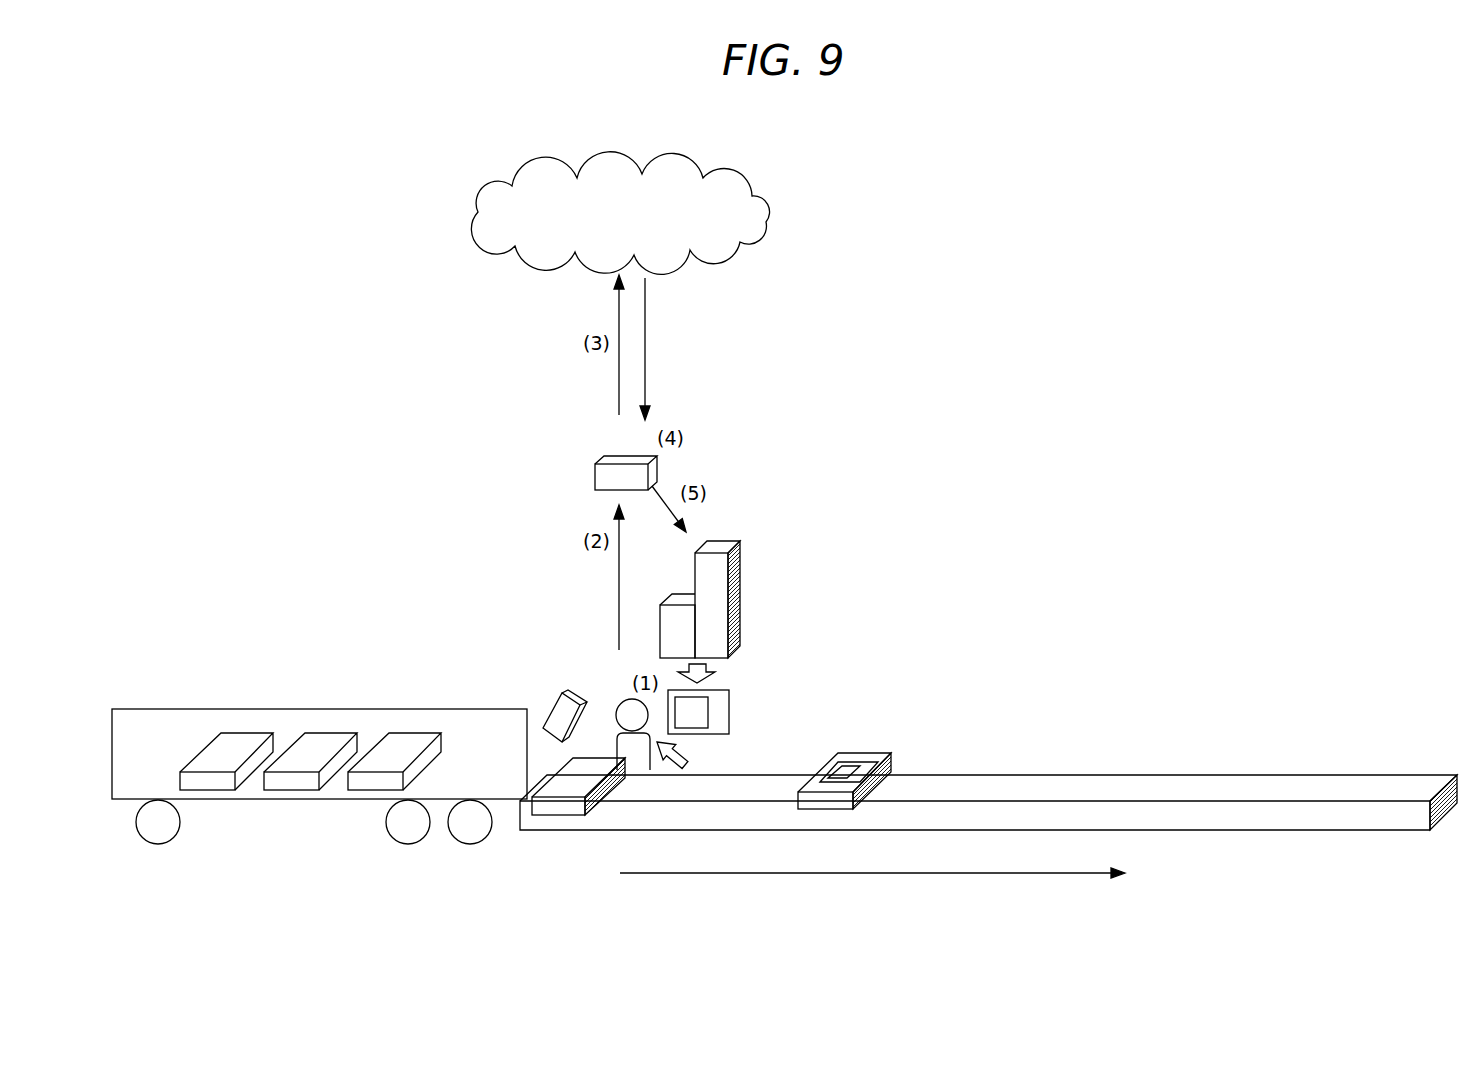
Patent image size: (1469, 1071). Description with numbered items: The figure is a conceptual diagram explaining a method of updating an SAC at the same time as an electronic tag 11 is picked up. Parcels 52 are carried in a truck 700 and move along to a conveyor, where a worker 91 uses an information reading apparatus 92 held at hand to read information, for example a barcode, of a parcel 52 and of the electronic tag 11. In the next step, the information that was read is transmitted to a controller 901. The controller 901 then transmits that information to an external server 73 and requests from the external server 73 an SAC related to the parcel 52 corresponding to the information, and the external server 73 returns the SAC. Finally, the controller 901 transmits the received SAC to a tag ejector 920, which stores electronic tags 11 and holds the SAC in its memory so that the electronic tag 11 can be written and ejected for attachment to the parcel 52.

The external server 73 is at (617, 172).
The controller 901 is at (594, 470).
The tag ejector 920 is at (742, 612).
The electronic tag 11 is at (732, 705).
The worker 91 is at (627, 695).
The information reading apparatus 92 is at (565, 688).
The truck 700 is at (172, 707).
The parcel 52 is at (206, 779).